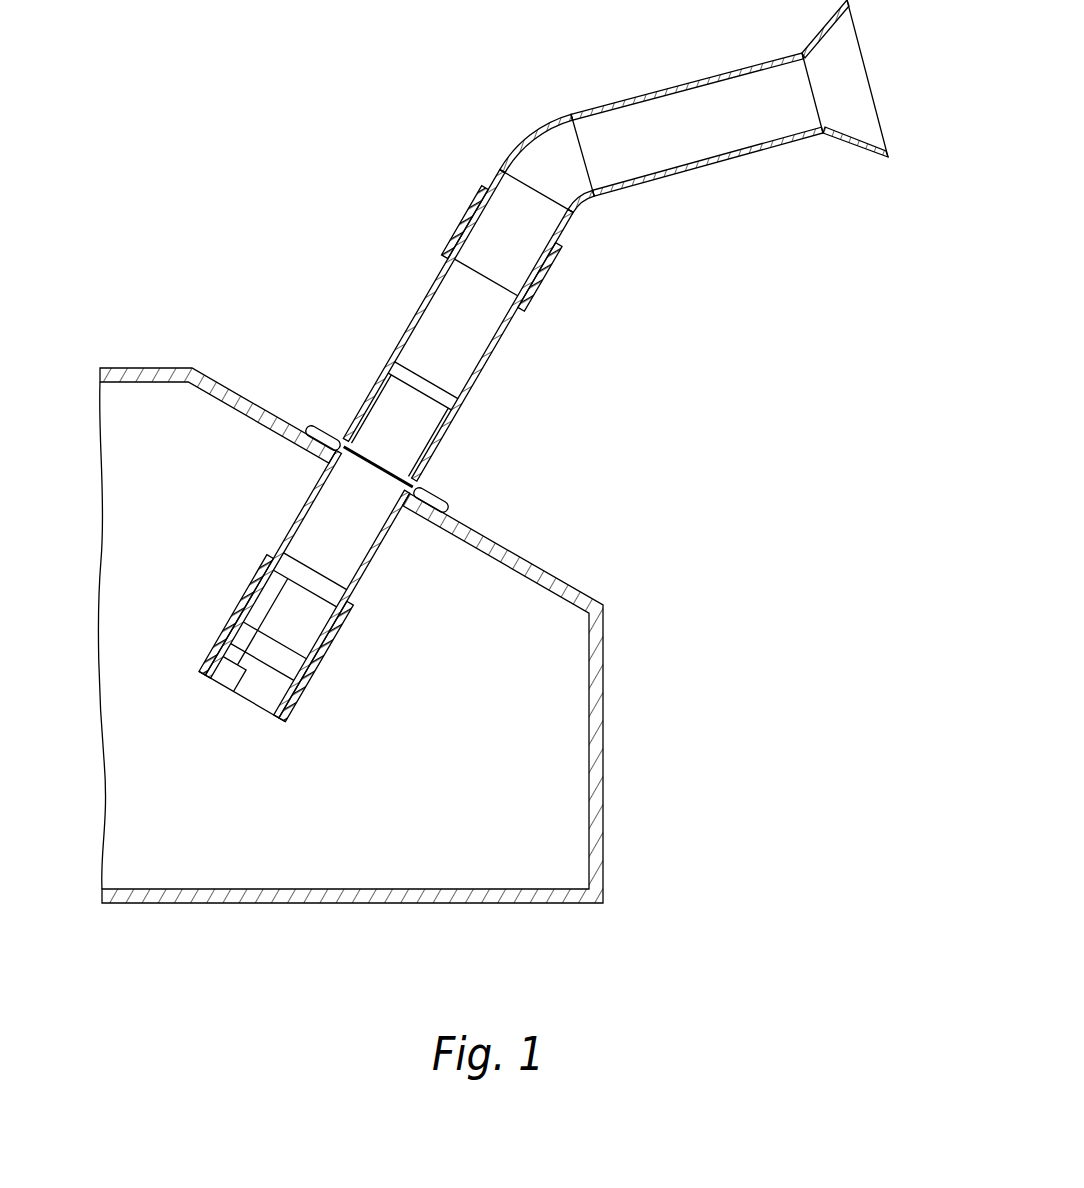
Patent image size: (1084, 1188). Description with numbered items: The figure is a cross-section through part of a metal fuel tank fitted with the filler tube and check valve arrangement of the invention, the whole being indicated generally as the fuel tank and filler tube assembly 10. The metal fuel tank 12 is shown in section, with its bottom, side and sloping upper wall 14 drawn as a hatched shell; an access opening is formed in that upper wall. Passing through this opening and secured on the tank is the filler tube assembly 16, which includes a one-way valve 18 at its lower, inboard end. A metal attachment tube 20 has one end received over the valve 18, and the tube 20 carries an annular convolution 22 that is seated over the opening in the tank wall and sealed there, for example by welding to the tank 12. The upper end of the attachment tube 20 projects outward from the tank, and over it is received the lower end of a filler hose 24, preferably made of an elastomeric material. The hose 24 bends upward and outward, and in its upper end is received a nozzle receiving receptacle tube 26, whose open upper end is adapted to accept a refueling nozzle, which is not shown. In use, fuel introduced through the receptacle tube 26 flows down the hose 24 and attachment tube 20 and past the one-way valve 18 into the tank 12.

The fuel tank and filler tube assembly 10 is at (567, 415).
The fuel tank 12 is at (605, 777).
The container wall 14 is at (333, 452).
The filler tube assembly 16 is at (377, 282).
The one-way valve 18 is at (215, 612).
The attachment tube 20 is at (380, 555).
The annular convolution 22 is at (447, 493).
The filler hose 24 is at (502, 364).
The nozzle receiving receptacle tube 26 is at (670, 88).